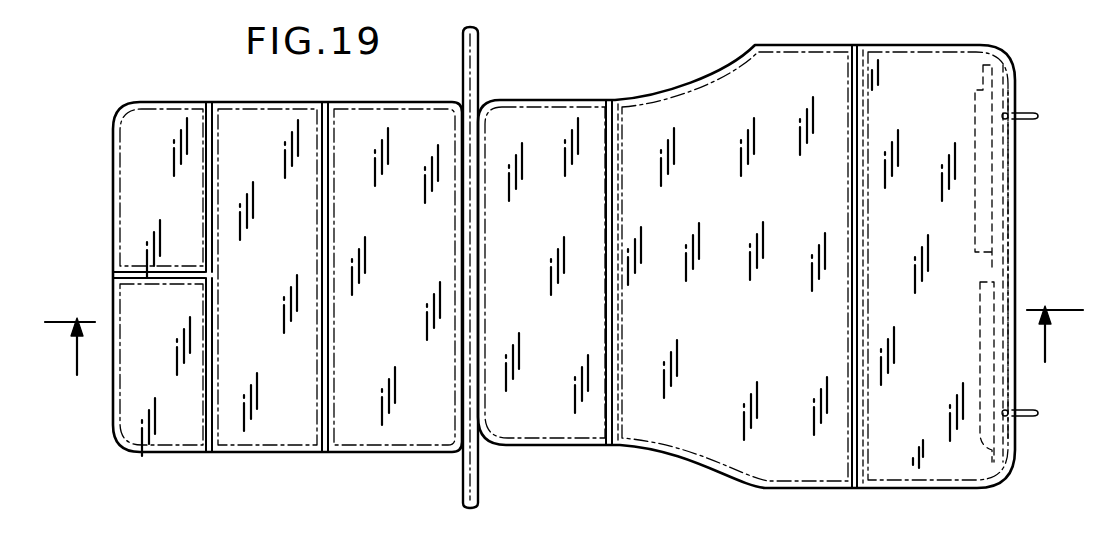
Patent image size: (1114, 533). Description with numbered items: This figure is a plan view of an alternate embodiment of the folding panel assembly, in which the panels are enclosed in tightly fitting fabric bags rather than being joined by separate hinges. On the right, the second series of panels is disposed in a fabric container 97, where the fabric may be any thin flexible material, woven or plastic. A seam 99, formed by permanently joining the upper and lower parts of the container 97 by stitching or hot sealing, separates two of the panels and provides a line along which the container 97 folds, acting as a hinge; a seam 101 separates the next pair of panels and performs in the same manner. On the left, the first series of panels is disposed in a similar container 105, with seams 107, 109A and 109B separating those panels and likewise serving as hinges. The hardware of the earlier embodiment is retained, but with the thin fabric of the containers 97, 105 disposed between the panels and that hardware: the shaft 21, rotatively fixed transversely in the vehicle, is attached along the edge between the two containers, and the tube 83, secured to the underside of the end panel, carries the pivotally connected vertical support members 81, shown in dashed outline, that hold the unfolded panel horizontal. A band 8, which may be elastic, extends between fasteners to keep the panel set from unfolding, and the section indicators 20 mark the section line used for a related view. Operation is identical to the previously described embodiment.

The band 8 is at (1022, 118).
The section line 20- 20 is at (557, 340).
The shaft 21 is at (479, 486).
The vertical support members 81 is at (974, 120).
The tube 83 is at (1035, 250).
The container 97 is at (674, 455).
The seam 99 is at (613, 446).
The seam 101 is at (861, 466).
The container 105 is at (299, 458).
The seam 107 is at (324, 125).
The seam 109A is at (216, 453).
The seam 109B is at (210, 120).